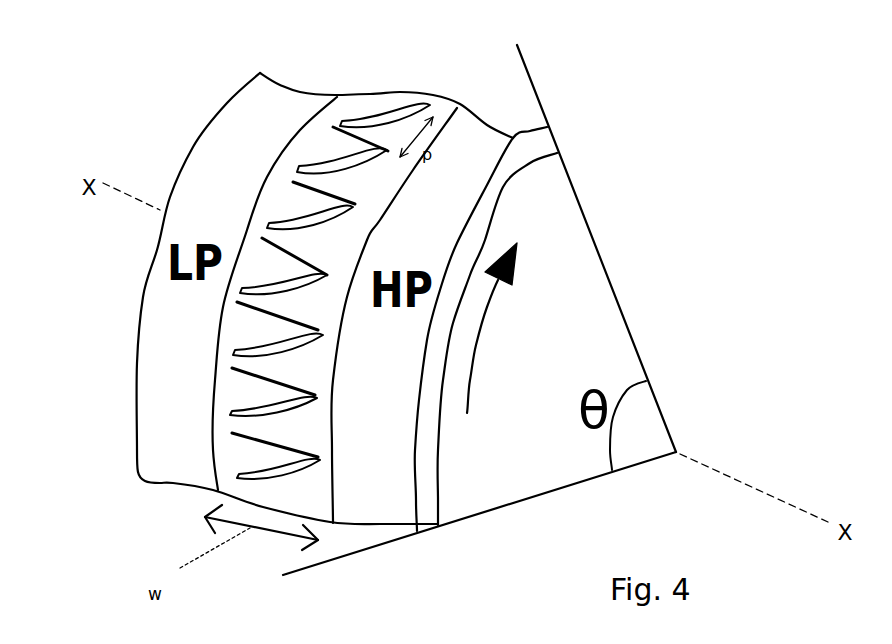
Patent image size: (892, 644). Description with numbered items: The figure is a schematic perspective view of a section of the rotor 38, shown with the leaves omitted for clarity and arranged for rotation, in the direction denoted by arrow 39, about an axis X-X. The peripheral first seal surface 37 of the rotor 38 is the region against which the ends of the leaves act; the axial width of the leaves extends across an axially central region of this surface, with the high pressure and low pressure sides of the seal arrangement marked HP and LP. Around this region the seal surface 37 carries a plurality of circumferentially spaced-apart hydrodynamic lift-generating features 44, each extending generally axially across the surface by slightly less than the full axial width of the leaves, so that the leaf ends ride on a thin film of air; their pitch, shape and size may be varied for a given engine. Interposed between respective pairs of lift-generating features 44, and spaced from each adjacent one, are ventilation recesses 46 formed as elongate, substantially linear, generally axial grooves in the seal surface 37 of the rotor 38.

The first seal surface 37 is at (223, 389).
The rotor 38 is at (193, 147).
The arrow 39 is at (492, 302).
The hydrodynamic lift-generating features 44 is at (277, 292).
The ventilation recesses 46 is at (242, 308).